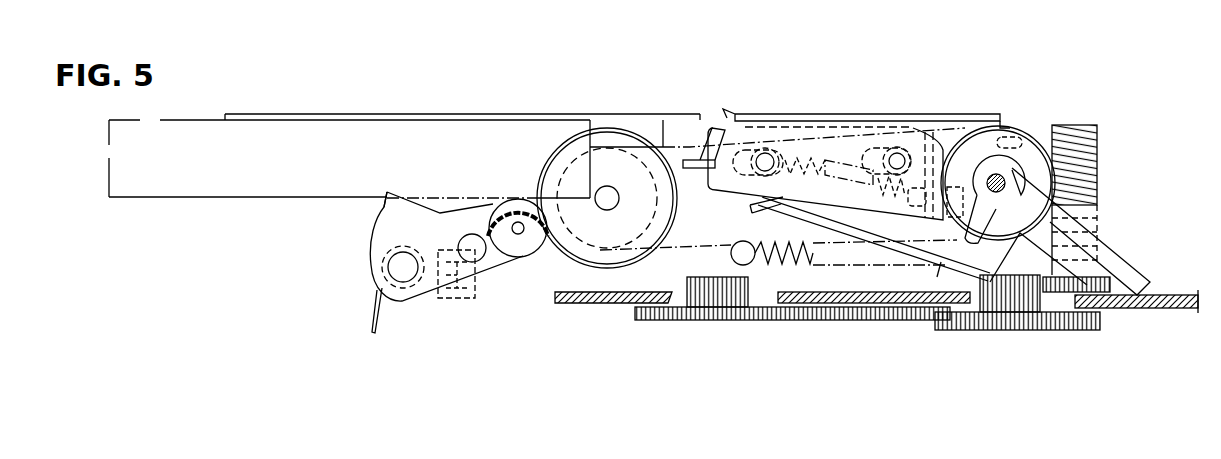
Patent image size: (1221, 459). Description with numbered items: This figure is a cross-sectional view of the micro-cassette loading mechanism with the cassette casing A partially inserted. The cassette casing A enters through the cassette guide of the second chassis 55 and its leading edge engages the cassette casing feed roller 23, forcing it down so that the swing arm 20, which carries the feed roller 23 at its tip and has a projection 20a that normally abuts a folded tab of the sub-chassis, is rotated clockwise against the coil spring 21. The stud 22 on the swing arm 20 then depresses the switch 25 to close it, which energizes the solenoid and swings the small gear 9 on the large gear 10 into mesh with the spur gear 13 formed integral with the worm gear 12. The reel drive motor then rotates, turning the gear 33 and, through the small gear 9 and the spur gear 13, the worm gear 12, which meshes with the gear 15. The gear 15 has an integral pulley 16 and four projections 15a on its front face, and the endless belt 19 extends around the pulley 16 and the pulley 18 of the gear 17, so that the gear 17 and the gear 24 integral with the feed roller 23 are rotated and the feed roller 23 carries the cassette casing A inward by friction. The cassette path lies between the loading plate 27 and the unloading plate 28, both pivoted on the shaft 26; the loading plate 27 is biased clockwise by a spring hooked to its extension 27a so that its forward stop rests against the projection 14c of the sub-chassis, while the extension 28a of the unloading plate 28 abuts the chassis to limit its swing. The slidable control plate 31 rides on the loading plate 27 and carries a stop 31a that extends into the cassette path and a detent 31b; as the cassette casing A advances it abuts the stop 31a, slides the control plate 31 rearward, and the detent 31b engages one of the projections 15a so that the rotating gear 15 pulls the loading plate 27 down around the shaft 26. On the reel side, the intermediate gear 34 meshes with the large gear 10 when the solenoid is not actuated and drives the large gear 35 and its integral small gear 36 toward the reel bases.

The cassette casing A is at (232, 199).
The second chassis 55 is at (380, 112).
The endless belt 19 is at (663, 147).
The gear 17 is at (613, 132).
The pulley 18 is at (572, 160).
The cassette casing feed roller 23 is at (517, 245).
The gear 24 is at (514, 195).
The swing arm 20 is at (375, 262).
The projection 20a is at (380, 207).
The coil spring 21 is at (372, 315).
The stud 22 is at (477, 256).
The switch 25 is at (455, 290).
The projection 14c is at (697, 160).
The loading plate 27 is at (812, 115).
The gear 33 is at (795, 165).
The slidable control plate 31 is at (890, 130).
The detent 31b is at (935, 177).
The stop 31a is at (937, 277).
The unloading plate 28 is at (896, 252).
The extension 28a is at (1135, 272).
The gear 15 is at (1009, 149).
The pulley 16 is at (1012, 130).
The projections 15a is at (990, 132).
The shaft 26 is at (1000, 178).
The worm gear 12 is at (1097, 152).
The large gear 35 is at (662, 320).
The small gear 36 is at (720, 290).
The intermediate gear 34 is at (815, 320).
The extension 27a is at (1003, 315).
The small gear 9 is at (1030, 297).
The large gear 10 is at (1073, 323).
The spur gear 13 is at (1110, 306).